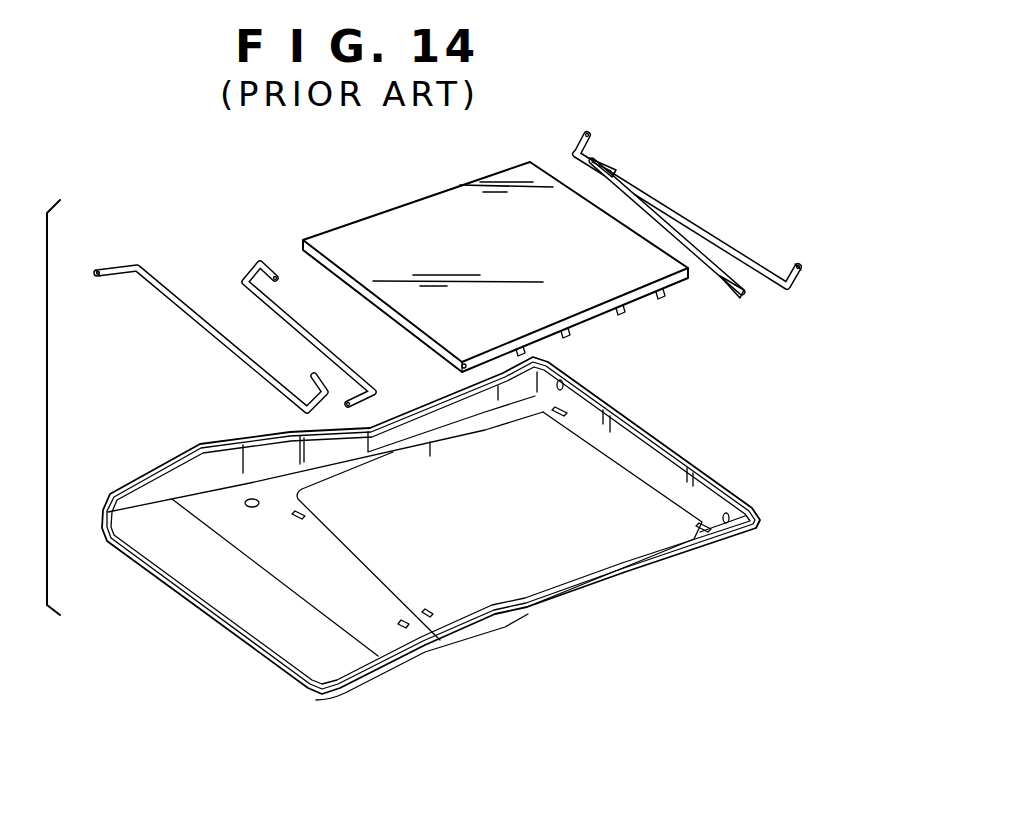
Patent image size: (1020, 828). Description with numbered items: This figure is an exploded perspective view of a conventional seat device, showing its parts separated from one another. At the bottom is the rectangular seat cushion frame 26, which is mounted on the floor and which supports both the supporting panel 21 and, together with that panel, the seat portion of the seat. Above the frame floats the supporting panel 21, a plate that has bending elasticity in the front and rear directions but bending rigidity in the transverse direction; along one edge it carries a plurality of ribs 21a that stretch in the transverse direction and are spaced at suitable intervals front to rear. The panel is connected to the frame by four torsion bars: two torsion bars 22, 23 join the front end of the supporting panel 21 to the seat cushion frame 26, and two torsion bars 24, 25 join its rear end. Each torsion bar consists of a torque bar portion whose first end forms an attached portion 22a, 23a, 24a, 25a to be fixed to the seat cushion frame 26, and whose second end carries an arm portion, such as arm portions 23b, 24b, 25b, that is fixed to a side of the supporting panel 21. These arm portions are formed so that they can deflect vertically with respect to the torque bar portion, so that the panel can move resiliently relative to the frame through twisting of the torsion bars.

The supporting panel 21 is at (417, 233).
The ribs 21a is at (597, 322).
The torsion bar 22 is at (306, 380).
The attached portion 22a is at (108, 278).
The torsion bar 23 is at (350, 372).
The attached portion 23a is at (357, 406).
The arm portion 23b is at (270, 262).
The torsion bar 24 is at (750, 236).
The attached portion 24a is at (583, 138).
The arm portion 24b is at (728, 295).
The torsion bar 25 is at (720, 222).
The attached portion 25a is at (796, 284).
The arm portion 25b is at (625, 158).
The seat cushion frame 26 is at (183, 597).